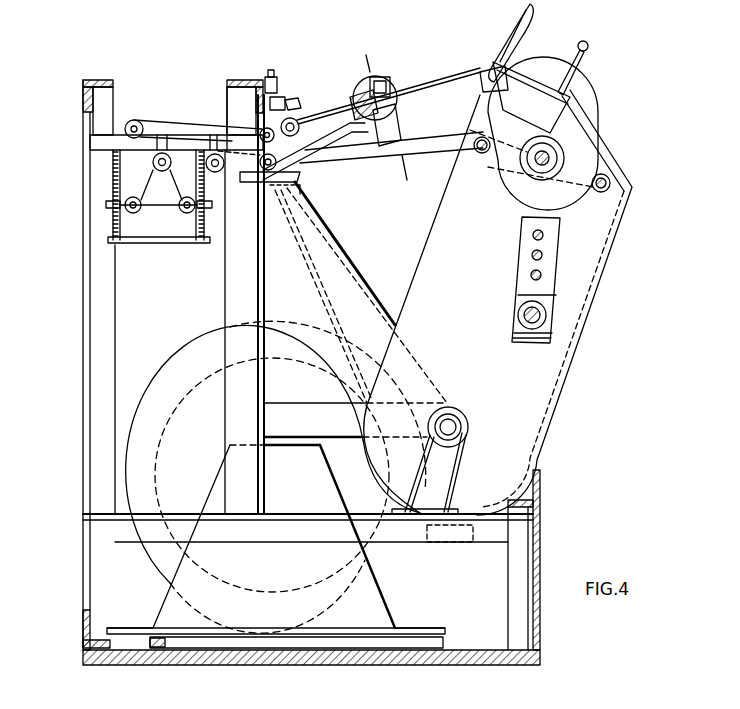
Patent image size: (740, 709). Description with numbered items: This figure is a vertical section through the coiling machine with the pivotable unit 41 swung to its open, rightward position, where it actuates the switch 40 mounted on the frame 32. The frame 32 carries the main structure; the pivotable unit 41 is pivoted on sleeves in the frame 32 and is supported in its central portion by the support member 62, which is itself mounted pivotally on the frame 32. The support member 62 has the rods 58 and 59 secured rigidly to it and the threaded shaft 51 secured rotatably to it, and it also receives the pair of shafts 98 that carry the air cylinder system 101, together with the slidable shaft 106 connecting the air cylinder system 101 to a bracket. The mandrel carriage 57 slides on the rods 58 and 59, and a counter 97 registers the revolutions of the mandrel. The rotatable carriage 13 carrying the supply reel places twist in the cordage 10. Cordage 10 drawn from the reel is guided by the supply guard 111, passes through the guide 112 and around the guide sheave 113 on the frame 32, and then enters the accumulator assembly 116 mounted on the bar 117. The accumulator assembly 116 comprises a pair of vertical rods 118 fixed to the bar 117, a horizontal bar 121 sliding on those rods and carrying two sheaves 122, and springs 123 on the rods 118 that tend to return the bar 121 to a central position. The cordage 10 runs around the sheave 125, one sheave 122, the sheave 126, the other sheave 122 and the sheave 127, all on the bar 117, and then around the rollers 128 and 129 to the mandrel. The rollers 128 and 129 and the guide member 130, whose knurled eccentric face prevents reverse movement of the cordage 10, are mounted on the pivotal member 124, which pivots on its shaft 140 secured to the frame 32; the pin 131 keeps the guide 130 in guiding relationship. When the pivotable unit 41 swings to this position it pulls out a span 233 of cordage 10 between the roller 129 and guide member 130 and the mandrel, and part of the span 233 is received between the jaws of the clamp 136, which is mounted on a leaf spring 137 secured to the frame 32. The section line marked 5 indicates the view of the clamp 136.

The section line for FIG. 5 is at (366, 55).
The cordage 10 is at (345, 322).
The rotatable carriage 13 is at (397, 610).
The frame 32 is at (546, 545).
The switch 40 is at (447, 537).
The pivotable unit 41 is at (624, 236).
The threaded shaft 51 is at (546, 153).
The mandrel carriage 57 is at (550, 60).
The rod 58 is at (480, 160).
The rod 59 is at (610, 183).
The support member 62 is at (533, 408).
The counter 97 is at (524, 70).
The shafts 98 is at (545, 236).
The air cylinder system 101 is at (550, 316).
The shaft 106 is at (543, 256).
The supply guard 111 is at (345, 268).
The guide 112 is at (330, 213).
The guide sheave 113 is at (277, 163).
The accumulator assembly 116 is at (167, 248).
The bar 117 is at (180, 142).
The vertical rods 118 is at (207, 215).
The horizontal bar 121 is at (157, 203).
The sheaves 122 is at (183, 214).
The springs 123 is at (207, 183).
The pivotal member 124 is at (266, 122).
The sheave 125 is at (224, 164).
The sheave 126 is at (156, 172).
The sheave 127 is at (138, 121).
The roller 128 is at (266, 124).
The roller 129 is at (300, 124).
The guide member 130 is at (301, 108).
The pin 131 is at (294, 100).
The clamp 136 is at (352, 95).
The leaf spring 137 is at (323, 157).
The shaft 140 is at (273, 65).
The span 233 is at (438, 80).